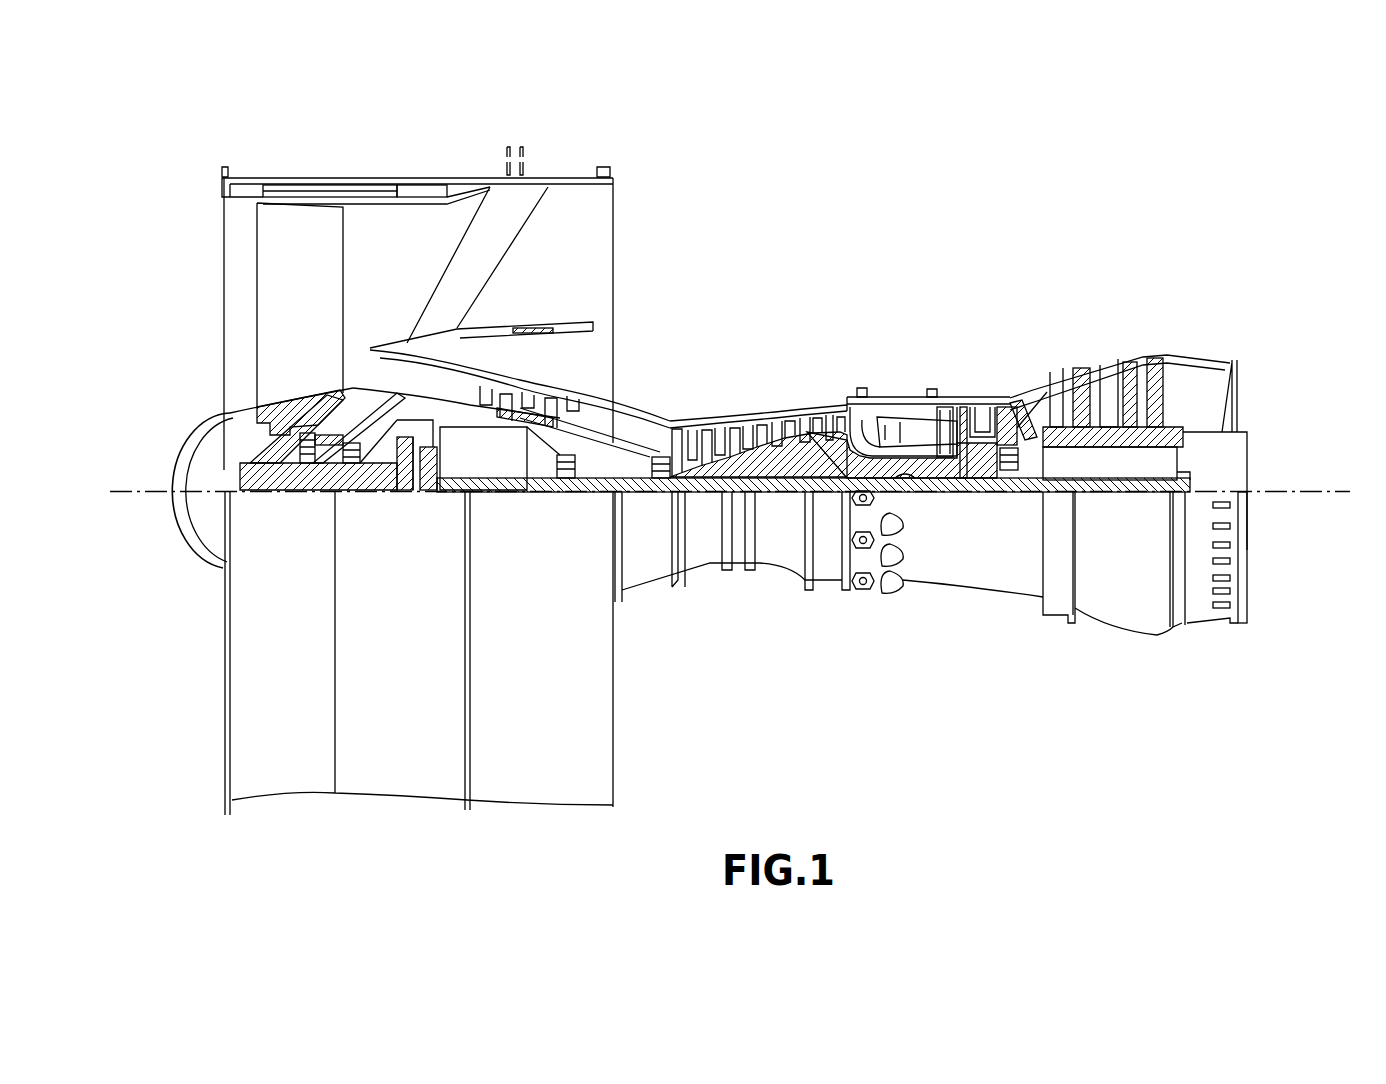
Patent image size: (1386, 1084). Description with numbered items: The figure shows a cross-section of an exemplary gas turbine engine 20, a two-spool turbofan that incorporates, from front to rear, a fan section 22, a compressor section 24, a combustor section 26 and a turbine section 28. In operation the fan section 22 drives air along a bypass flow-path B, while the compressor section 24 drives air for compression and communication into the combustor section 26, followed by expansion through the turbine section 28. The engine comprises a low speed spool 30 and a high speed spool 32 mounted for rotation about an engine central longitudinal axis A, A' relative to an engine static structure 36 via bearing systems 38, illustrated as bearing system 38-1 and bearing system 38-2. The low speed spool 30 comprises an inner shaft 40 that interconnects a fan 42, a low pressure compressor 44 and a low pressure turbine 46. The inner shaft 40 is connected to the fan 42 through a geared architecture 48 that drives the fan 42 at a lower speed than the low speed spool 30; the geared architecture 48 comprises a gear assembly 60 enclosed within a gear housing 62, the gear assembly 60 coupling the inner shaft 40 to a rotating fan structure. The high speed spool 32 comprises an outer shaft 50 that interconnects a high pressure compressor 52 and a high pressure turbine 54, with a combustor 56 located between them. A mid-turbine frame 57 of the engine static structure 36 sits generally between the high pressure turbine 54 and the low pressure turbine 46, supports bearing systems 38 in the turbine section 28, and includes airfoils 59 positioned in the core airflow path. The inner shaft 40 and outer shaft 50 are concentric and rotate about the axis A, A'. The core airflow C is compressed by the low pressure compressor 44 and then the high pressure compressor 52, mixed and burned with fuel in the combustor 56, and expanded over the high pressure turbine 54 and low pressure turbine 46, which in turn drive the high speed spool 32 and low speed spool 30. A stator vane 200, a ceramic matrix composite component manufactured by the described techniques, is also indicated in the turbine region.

The gas turbine engine 20 is at (963, 206).
The fan section 22 is at (463, 156).
The compressor section 24 is at (473, 288).
The combustor section 26 is at (958, 280).
The turbine section 28 is at (1177, 288).
The low speed spool 30 is at (786, 530).
The high speed spool 32 is at (827, 457).
The engine static structure 36 is at (204, 809).
The bearing system 38 is at (1012, 483).
The bearing system 38-1 is at (312, 467).
The bearing system 38-2 is at (563, 480).
The inner shaft 40 is at (637, 492).
The fan 42 is at (300, 305).
The low pressure compressor section 44 is at (545, 390).
The low pressure turbine section 46 is at (1110, 378).
The geared architecture 48 is at (430, 517).
The outer shaft 50 is at (910, 480).
The high pressure compressor 52 is at (780, 422).
The high pressure turbine section 54 is at (953, 407).
The combustor 56 is at (910, 430).
The mid-turbine frame 57 is at (1027, 427).
The airfoils 59 is at (1025, 417).
The gear assembly 60 is at (433, 465).
The gear housing 62 is at (430, 432).
The stator vane 200 is at (977, 417).
The engine central longitudinal axis A is at (131, 459).
The engine central longitudinal axis A' is at (1173, 531).
The bypass flow-path B is at (414, 260).
The core airflow C is at (347, 366).